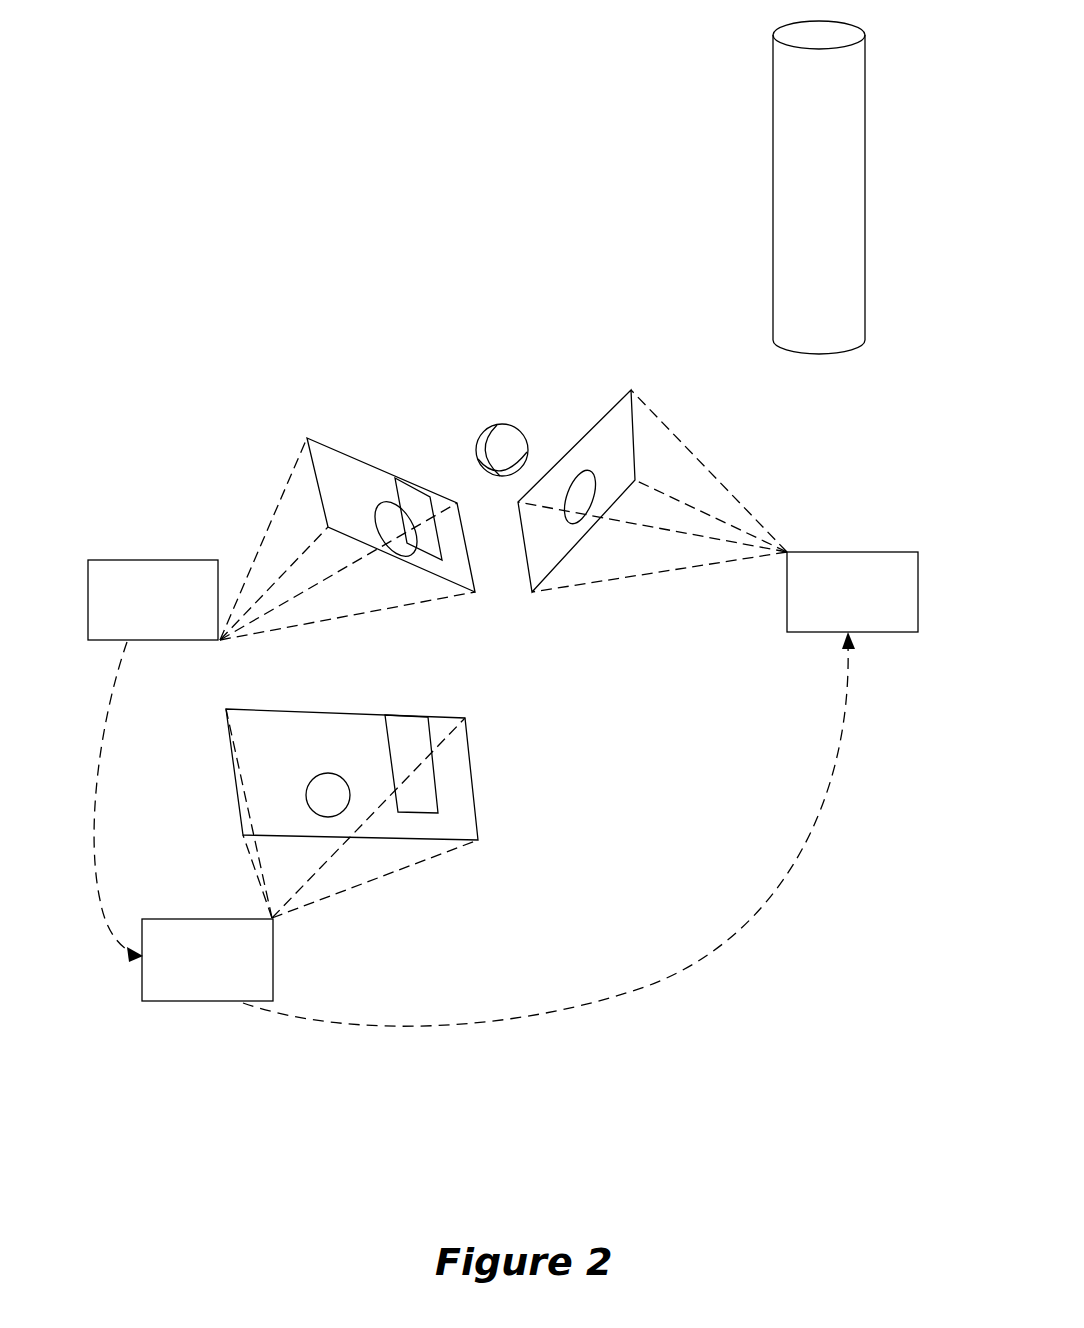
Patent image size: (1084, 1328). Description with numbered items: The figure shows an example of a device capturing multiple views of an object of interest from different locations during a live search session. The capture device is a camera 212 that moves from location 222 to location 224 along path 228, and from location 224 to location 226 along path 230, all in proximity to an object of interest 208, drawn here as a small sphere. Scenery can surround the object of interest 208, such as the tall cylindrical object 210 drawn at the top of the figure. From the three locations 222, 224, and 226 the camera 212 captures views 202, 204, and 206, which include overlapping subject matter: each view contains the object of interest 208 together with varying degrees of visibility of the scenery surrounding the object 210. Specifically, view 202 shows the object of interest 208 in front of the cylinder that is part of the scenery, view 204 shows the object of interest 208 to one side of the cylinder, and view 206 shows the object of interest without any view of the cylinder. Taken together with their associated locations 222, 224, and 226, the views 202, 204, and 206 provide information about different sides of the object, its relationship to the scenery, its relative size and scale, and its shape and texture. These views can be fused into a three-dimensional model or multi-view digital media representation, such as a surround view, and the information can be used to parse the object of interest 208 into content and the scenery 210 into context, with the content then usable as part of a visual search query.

The view 202 is at (317, 491).
The view 204 is at (473, 792).
The view 206 is at (635, 455).
The object of interest 208 is at (500, 425).
The scenery surrounding the object 210 is at (776, 165).
The camera 212 is at (870, 616).
The location 222 is at (220, 643).
The location 224 is at (273, 919).
The location 226 is at (787, 554).
The path 228 is at (120, 802).
The path 230 is at (549, 829).